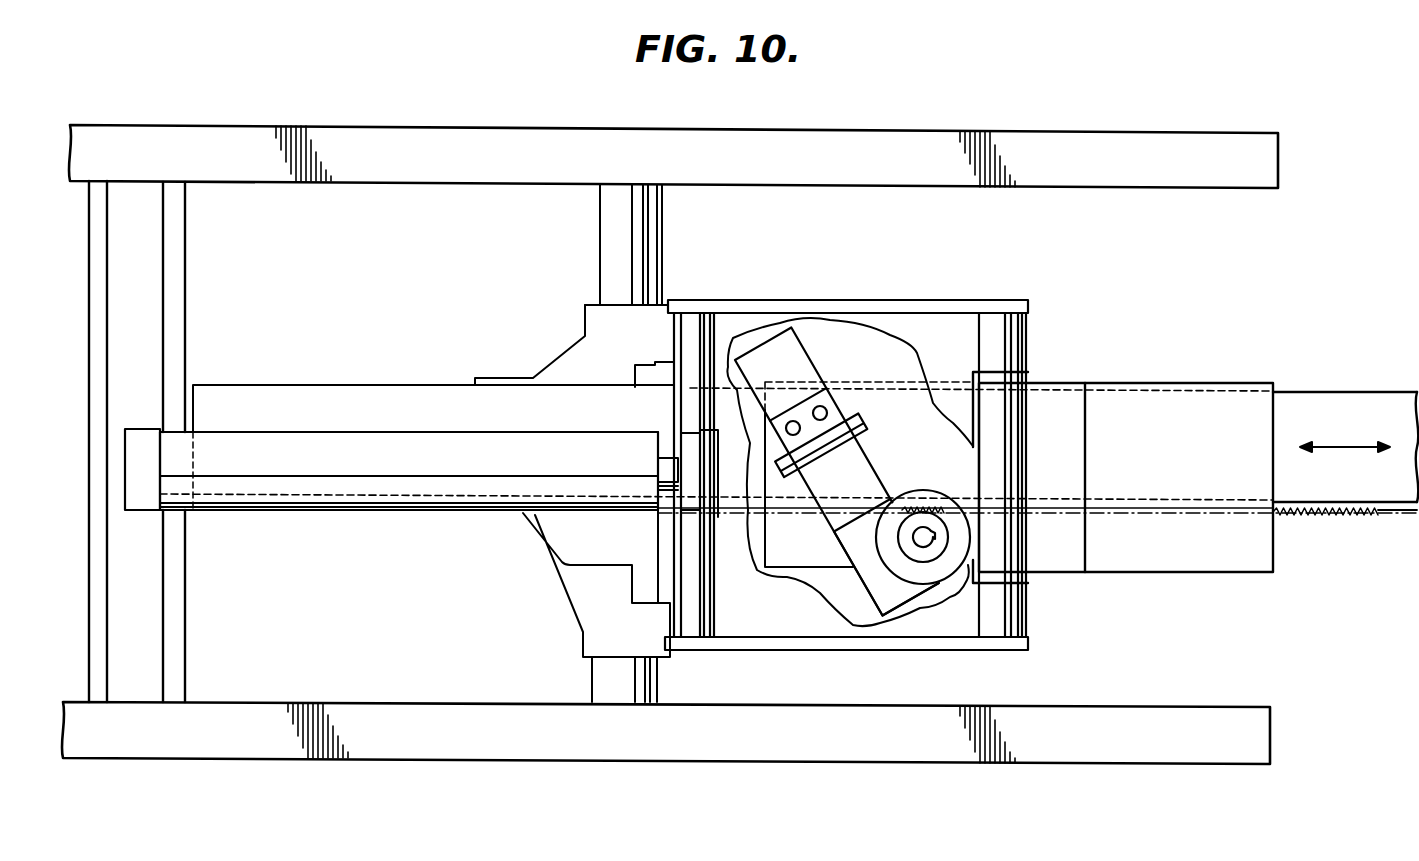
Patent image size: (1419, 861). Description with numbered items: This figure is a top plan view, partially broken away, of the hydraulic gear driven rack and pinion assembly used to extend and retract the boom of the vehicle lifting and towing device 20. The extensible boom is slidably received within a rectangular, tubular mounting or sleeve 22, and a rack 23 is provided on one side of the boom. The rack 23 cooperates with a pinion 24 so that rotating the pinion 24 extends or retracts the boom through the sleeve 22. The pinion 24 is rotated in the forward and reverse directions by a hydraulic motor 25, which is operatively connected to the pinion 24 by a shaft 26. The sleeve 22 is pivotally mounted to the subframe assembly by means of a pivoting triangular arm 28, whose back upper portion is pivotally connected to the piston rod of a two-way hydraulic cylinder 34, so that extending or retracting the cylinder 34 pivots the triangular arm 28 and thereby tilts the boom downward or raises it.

The vehicle lifting and towing device 20 is at (1315, 392).
The sleeve 22 is at (1156, 383).
The rack 23 is at (1327, 518).
The pinion 24 is at (902, 540).
The hydraulic motor 25 is at (838, 544).
The shaft 26 is at (926, 522).
The triangular arm 28 is at (908, 300).
The two-way hydraulic cylinder 34 is at (329, 432).